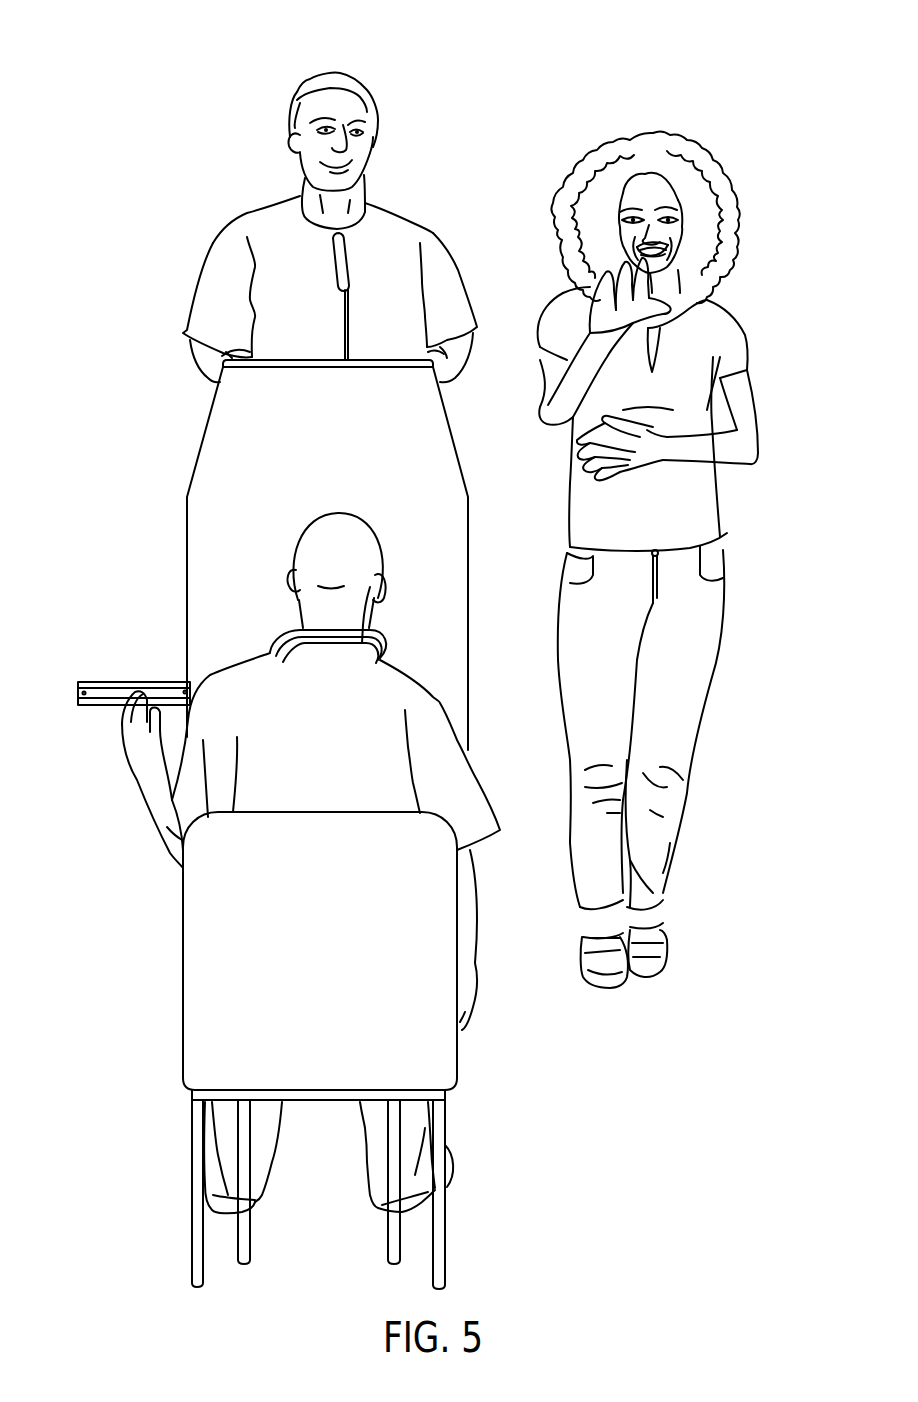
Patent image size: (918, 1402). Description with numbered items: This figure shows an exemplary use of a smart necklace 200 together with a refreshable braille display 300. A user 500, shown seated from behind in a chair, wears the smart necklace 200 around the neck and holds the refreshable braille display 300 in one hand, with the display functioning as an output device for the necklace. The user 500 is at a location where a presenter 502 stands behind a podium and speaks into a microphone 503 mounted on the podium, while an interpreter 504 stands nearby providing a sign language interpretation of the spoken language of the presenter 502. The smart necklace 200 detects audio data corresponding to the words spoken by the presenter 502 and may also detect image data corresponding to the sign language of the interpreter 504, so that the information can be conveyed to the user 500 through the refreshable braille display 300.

The smart necklace 200 is at (360, 643).
The refreshable braille display 300 is at (90, 680).
The user 500 is at (277, 550).
The presenter 502 is at (393, 105).
The microphone 503 is at (347, 250).
The interpreter 504 is at (745, 155).